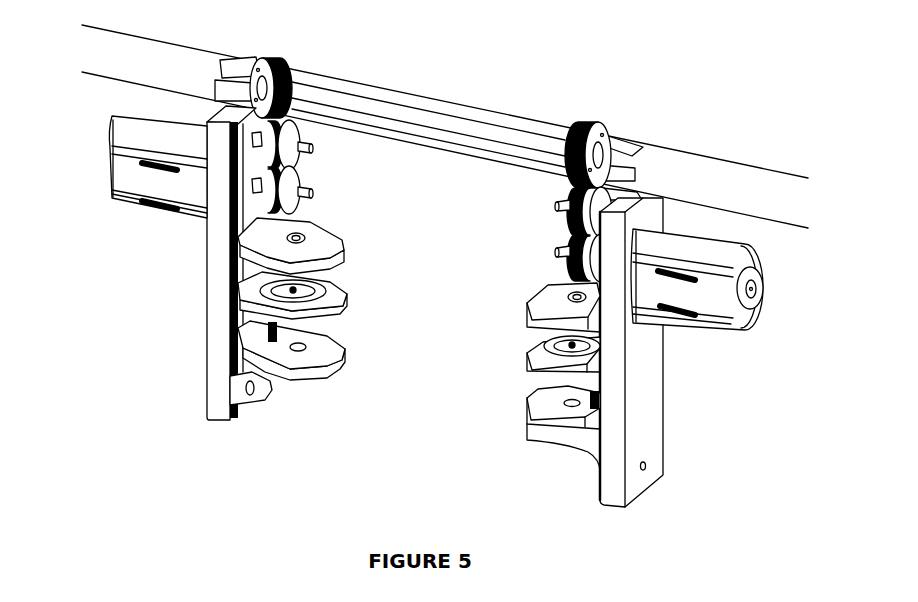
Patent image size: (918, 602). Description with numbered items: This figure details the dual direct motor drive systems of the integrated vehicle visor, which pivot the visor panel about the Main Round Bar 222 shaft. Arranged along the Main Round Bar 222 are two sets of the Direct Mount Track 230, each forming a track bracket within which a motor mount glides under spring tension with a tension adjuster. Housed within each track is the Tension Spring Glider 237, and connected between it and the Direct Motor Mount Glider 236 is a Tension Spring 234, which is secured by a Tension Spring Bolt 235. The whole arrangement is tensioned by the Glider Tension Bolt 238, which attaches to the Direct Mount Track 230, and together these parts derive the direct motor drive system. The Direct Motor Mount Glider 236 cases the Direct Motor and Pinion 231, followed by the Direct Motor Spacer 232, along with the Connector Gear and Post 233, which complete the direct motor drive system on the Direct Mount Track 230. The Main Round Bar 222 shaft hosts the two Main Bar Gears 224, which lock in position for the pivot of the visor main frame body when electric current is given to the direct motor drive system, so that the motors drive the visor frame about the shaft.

The Main Round Bar 222 is at (734, 173).
The Main Bar Gear 224 is at (305, 66).
The Direct Mount Track 230 is at (637, 386).
The Direct Motor and Pinion 231 is at (150, 187).
The Direct Motor Spacer 232 is at (630, 317).
The Connector Gear and Post 233 is at (300, 168).
The Tension Spring 234 is at (533, 338).
The Tension Spring Bolt 235 is at (540, 292).
The Direct Motor Mount Glider 236 is at (340, 242).
The Tension Spring Glider 237 is at (357, 300).
The Glider Tension Bolt 238 is at (275, 350).